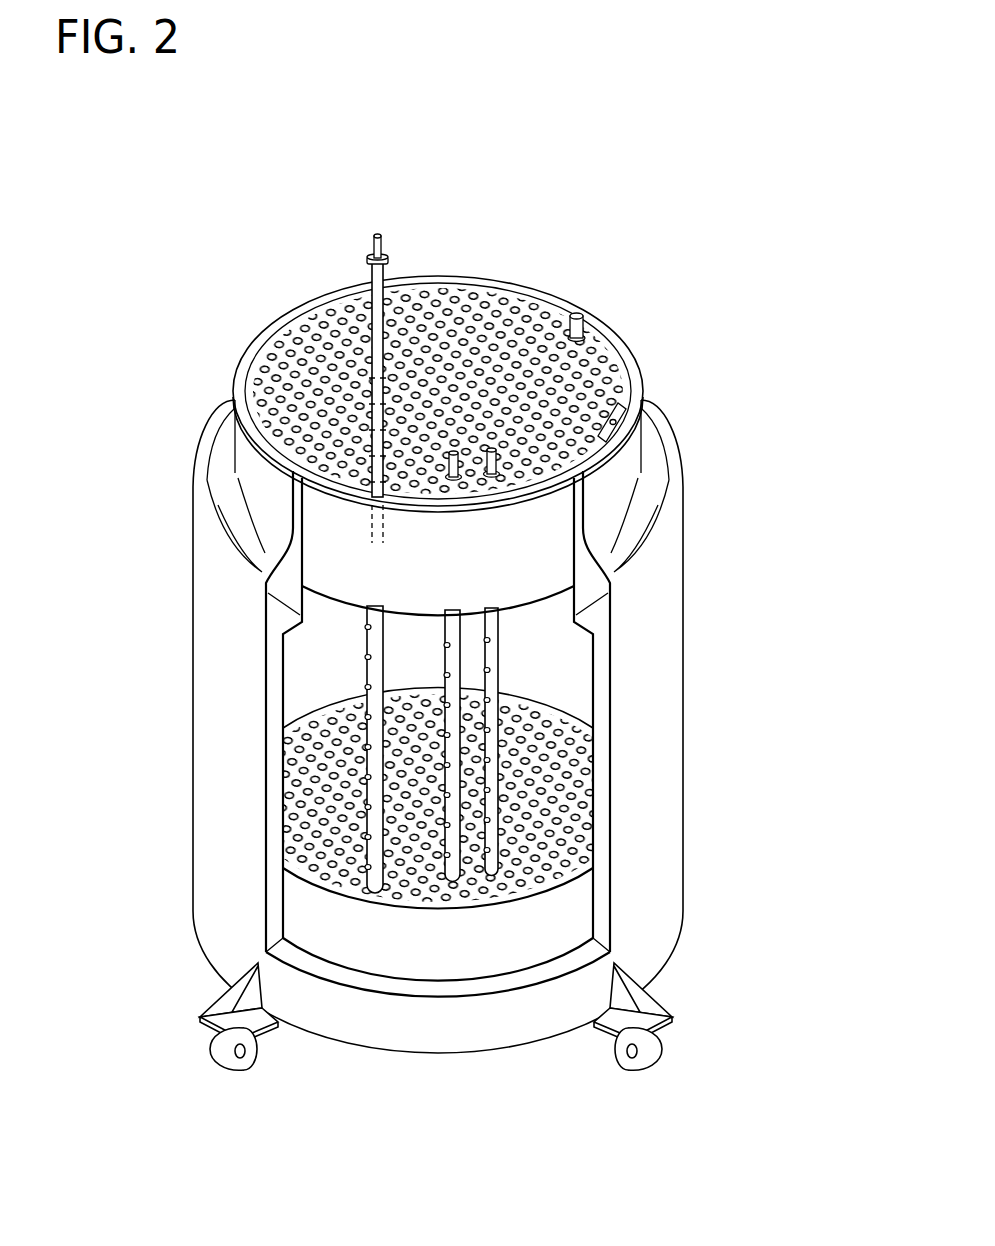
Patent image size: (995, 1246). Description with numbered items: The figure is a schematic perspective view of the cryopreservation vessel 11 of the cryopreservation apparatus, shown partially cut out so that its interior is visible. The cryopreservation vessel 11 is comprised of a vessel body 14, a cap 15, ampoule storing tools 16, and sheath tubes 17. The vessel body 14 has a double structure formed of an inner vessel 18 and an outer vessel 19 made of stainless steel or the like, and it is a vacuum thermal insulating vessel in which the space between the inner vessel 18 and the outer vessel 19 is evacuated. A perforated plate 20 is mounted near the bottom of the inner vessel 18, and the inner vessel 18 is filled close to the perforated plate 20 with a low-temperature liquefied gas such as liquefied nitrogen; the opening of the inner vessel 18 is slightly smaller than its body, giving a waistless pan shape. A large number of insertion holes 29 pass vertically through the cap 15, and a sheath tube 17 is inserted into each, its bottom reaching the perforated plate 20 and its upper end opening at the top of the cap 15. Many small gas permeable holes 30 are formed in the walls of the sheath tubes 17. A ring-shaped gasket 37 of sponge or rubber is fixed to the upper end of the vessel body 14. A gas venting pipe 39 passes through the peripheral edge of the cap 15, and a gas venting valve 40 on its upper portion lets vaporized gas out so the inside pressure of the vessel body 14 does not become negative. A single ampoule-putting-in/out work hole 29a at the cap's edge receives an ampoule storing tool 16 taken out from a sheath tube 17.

The cryopreservation vessel 11 is at (453, 675).
The vessel body 14 is at (645, 745).
The cap 15 is at (505, 567).
The ampoule storing tool 16 is at (383, 282).
The sheath tube 17 is at (373, 673).
The inner vessel 18 is at (302, 587).
The outer vessel 19 is at (262, 770).
The perforated plate 20 is at (483, 893).
The insertion hole 29 is at (530, 323).
The ampoule-putting-in/out work hole 29a is at (615, 422).
The gas permeable hole 30 is at (487, 640).
The gasket 37 is at (276, 468).
The gas venting pipe 39 is at (578, 312).
The gas venting valve 40 is at (583, 345).